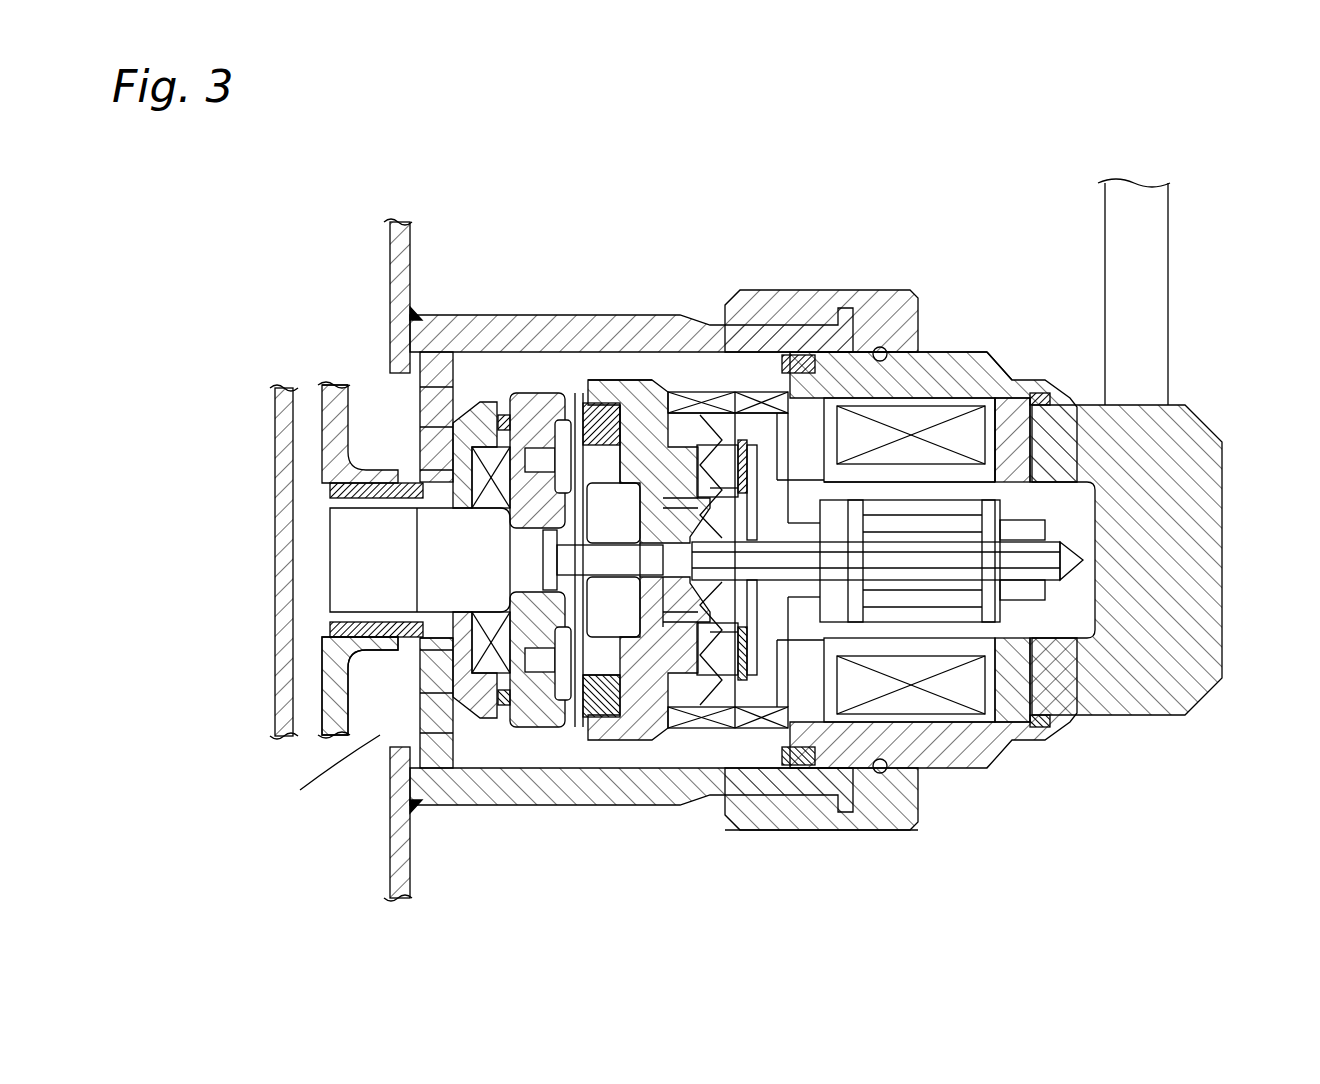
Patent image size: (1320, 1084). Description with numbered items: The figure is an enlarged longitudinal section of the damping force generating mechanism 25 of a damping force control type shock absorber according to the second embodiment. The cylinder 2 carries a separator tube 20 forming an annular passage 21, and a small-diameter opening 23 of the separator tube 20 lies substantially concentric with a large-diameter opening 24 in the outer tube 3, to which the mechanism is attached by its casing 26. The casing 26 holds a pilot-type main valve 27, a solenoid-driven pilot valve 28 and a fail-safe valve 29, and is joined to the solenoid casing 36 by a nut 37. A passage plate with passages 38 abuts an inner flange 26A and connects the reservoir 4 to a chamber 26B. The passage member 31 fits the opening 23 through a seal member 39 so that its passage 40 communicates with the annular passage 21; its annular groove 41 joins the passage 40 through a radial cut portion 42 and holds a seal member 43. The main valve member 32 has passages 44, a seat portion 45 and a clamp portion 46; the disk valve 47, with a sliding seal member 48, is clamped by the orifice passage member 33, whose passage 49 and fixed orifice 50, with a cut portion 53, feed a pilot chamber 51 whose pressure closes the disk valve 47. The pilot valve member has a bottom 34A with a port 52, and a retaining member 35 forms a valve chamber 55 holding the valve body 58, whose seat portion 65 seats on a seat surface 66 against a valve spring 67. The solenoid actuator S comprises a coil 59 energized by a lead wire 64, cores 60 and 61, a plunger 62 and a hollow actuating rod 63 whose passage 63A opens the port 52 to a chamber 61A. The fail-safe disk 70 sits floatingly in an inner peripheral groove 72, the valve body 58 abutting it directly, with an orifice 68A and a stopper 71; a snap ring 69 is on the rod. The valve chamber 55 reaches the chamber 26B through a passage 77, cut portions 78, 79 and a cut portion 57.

The cylinder 2 is at (275, 420).
The outer tube 3 is at (390, 258).
The reservoir 4 is at (326, 772).
The separator tube 20 is at (337, 385).
The annular passage 21 is at (324, 458).
The small-diameter opening 23 is at (340, 593).
The large-diameter opening 24 is at (432, 338).
The damping force generating mechanism 25 is at (878, 193).
The casing 26 is at (591, 400).
The inner flange 26A is at (392, 780).
The chamber 26B is at (392, 820).
The main valve 27 is at (580, 390).
The pilot valve 28 is at (702, 411).
The fail-safe valve 29 is at (800, 396).
The passage member 31 is at (392, 894).
The main valve member 32 is at (465, 710).
The orifice passage member 33 is at (562, 715).
The bottom 34A is at (665, 740).
The retaining member 35 is at (797, 760).
The solenoid casing 36 is at (960, 750).
The nut 37 is at (880, 830).
The passages 38 is at (454, 380).
The seal member 39 is at (340, 628).
The passage 40 is at (340, 491).
The annular groove 41 is at (539, 395).
The radial cut portion 42 is at (488, 400).
The seal member 43 is at (522, 390).
The passages 44 is at (435, 765).
The seat portion 45 is at (510, 720).
The clamp portion 46 is at (490, 770).
The disk valve 47 is at (618, 380).
The sliding seal member 48 is at (634, 380).
The passage 49 is at (543, 540).
The fixed orifice 50 is at (545, 567).
The pilot chamber 51 is at (553, 695).
The port 52 is at (660, 650).
The cut portion 53 is at (585, 720).
The valve chamber 55 is at (748, 675).
The cut portion 57 is at (745, 435).
The valve body 58 is at (740, 420).
The coil 59 is at (930, 398).
The core 60 is at (935, 396).
The core 61 is at (1040, 392).
The chamber 61A is at (1000, 580).
The plunger 62 is at (1020, 700).
The actuating rod 63 is at (1205, 446).
The passage 63A is at (1072, 570).
The lead wire 64 is at (1168, 303).
The seat portion 65 is at (690, 400).
The seat surface 66 is at (665, 640).
The valve spring 67 is at (720, 640).
The orifice 68A is at (925, 350).
The snap ring 69 is at (885, 773).
The fail-safe disk 70 is at (760, 672).
The stopper 71 is at (1000, 398).
The inner peripheral groove 72 is at (790, 320).
The passage 77 is at (820, 805).
The cut portion 78 is at (803, 355).
The cut portion 79 is at (877, 345).
The solenoid actuator S is at (1010, 352).